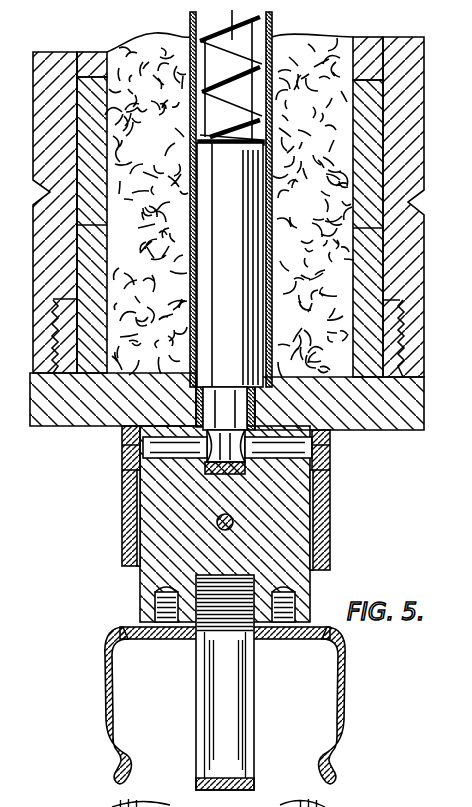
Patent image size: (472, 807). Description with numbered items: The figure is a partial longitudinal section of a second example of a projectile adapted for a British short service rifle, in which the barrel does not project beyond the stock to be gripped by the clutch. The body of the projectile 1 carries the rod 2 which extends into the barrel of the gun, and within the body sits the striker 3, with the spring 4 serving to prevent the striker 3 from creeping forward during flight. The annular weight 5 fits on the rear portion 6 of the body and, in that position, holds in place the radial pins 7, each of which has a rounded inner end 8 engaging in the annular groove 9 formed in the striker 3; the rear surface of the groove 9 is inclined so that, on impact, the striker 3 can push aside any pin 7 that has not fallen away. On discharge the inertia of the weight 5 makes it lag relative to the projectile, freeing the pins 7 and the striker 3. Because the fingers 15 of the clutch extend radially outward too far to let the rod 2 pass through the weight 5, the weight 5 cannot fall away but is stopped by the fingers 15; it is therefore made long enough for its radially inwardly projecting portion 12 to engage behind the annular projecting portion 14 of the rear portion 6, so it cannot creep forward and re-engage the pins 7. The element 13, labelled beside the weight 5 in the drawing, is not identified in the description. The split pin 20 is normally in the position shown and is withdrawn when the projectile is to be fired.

The body of the projectile 1 is at (424, 228).
The rod 2 is at (217, 762).
The striker 3 is at (230, 265).
The spring 4 is at (262, 25).
The weight 5 is at (123, 533).
The rear portion of the body 6 is at (178, 551).
The radial pins 7 is at (332, 463).
The rounded inner end 8 is at (133, 437).
The annular groove 9 is at (224, 430).
The radially inwardly projecting portion 12 is at (128, 452).
The gland ring 13 is at (138, 473).
The annular projecting portion 14 is at (137, 487).
The fingers 15 is at (122, 693).
The split pin 20 is at (233, 521).